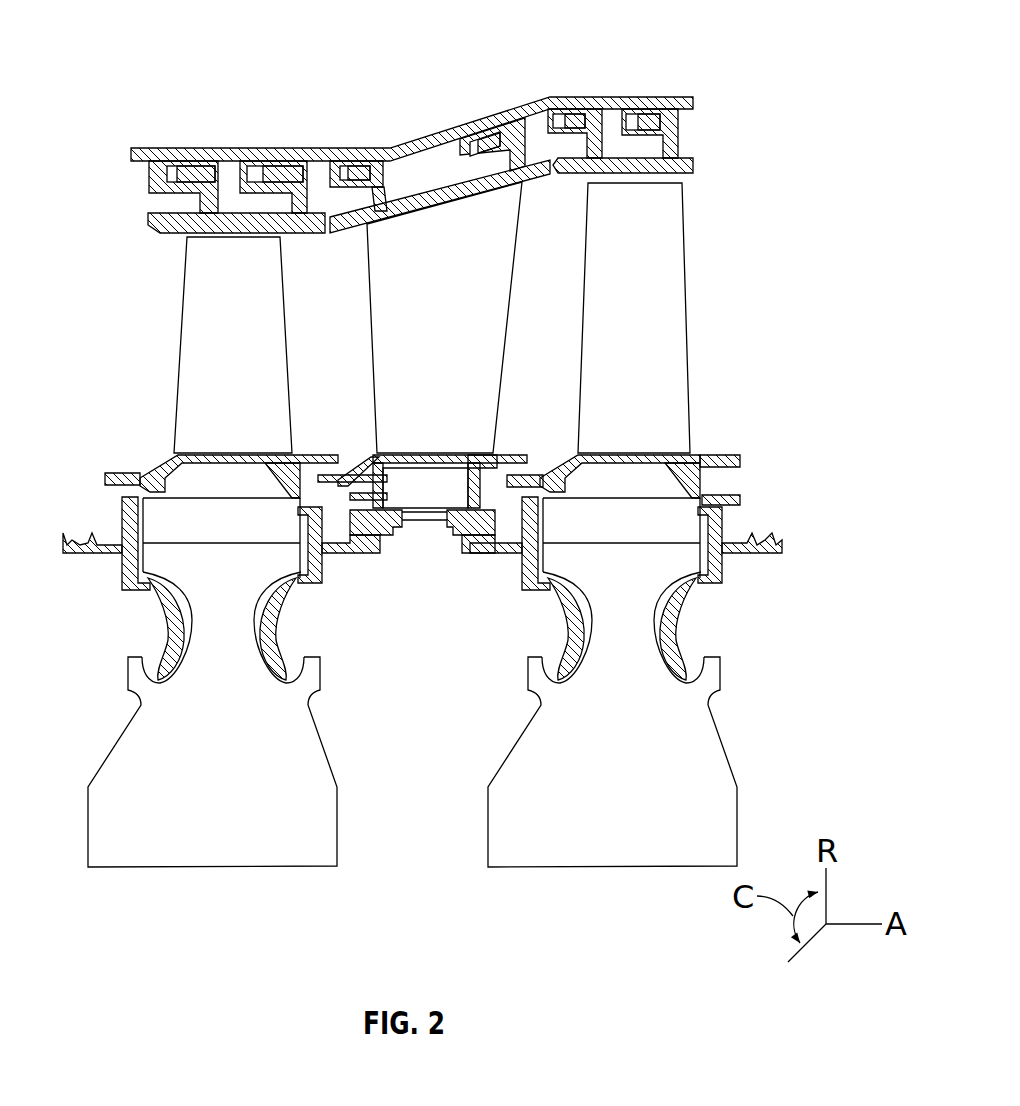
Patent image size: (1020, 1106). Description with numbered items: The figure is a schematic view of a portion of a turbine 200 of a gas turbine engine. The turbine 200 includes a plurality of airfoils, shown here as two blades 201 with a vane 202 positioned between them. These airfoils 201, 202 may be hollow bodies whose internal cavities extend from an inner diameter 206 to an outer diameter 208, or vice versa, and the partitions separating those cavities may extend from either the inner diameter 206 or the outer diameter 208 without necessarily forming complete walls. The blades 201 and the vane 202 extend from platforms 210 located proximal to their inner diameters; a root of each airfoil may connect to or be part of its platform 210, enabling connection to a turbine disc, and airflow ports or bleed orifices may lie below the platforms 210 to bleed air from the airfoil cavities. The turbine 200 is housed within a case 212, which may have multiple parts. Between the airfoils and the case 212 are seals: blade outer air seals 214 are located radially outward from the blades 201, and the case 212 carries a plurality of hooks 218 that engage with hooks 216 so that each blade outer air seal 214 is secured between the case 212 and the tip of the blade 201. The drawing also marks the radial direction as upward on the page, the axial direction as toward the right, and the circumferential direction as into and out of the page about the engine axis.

The turbine 200 is at (127, 41).
The blade 201 is at (263, 308).
The vane 202 is at (487, 308).
The inner diameter 206 is at (357, 447).
The outer diameter 208 is at (165, 273).
The platform 210 is at (512, 453).
The case 212 is at (470, 123).
The blade outer air seal 214 is at (260, 220).
The hook 216 is at (187, 167).
The hook 218 is at (283, 185).